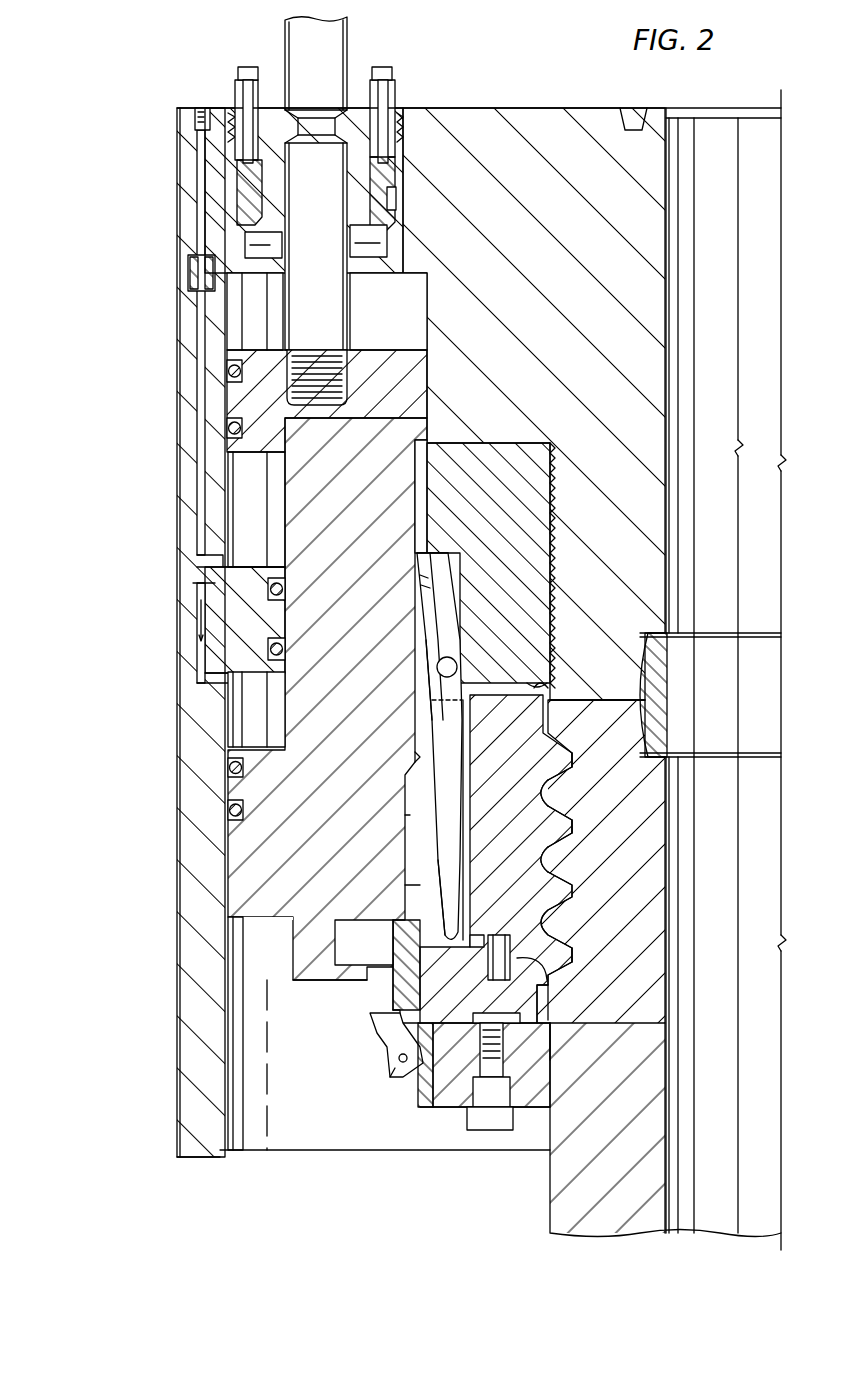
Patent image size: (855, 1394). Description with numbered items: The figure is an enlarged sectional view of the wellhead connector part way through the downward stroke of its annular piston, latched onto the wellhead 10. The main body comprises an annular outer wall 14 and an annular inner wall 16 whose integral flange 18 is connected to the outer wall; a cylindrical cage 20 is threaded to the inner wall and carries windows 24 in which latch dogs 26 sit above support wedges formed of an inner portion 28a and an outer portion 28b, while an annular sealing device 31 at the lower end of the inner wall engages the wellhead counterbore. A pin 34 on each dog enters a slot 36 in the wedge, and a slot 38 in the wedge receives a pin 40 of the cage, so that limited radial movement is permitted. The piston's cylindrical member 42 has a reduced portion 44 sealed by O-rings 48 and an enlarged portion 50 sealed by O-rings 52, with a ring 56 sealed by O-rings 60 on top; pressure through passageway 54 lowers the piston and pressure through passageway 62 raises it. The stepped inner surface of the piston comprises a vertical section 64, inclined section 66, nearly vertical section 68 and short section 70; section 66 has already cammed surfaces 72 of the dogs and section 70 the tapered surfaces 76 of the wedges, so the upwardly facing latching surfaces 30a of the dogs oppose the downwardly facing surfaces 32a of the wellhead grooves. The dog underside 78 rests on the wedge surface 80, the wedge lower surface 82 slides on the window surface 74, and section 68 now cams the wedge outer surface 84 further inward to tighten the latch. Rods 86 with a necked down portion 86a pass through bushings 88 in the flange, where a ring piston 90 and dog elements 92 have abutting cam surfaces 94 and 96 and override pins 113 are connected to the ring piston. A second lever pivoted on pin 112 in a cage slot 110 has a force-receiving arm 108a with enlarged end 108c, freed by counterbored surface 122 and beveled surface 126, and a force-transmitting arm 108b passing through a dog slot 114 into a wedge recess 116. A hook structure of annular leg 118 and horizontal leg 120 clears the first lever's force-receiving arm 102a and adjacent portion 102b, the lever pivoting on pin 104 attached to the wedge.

The wellhead 10 is at (653, 1163).
The annular outer wall 14 is at (195, 1060).
The annular inner wall 16 is at (650, 529).
The integral flange 18 is at (222, 120).
The cylindrical cage 20 is at (537, 492).
The windows 24 is at (553, 655).
The latch dogs 26 is at (585, 925).
The inner portion 28a is at (560, 1035).
The outer portion 28b is at (393, 990).
The latching surfaces 30a is at (572, 807).
The annular sealing device 31 is at (660, 665).
The downwardly facing surfaces 32a is at (546, 792).
The pin 34 is at (572, 955).
The slot 36 is at (484, 930).
The slot 38 is at (552, 1083).
The pin 40 is at (470, 1065).
The cylindrical member 42 is at (360, 500).
The reduced outer diameter portion 44 is at (285, 710).
The O-rings 48 is at (287, 648).
The enlarged diameter portion 50 is at (237, 862).
The O-rings 52 is at (228, 768).
The passageway 54 is at (205, 652).
The ring 56 is at (410, 387).
The O-rings 60 is at (228, 370).
The passageway 62 is at (200, 515).
The straight vertical section 64 is at (427, 637).
The inclined section 66 is at (412, 762).
The section 68 is at (405, 818).
The short section 70 is at (410, 889).
The inclined surfaces 72 is at (432, 705).
The horizontal surfaces 74 is at (552, 1023).
The tapered surfaces 76 is at (395, 925).
The underside 78 is at (523, 995).
The upwardly facing surface 80 is at (555, 980).
The lower surfaces 82 is at (480, 1035).
The radially outer surfaces 84 is at (387, 969).
The rods 86 is at (347, 320).
The necked down portion 86a is at (322, 118).
The bushings 88 is at (403, 127).
The ring piston 90 is at (397, 190).
The dog elements 92 is at (250, 245).
The cam surface 94 is at (258, 222).
The cam surface 96 is at (393, 221).
The force-receiving arm 102a is at (379, 1022).
The pawl edge 102b is at (425, 1062).
The pivot pin 104 is at (403, 1064).
The force-receiving arm 108a is at (430, 593).
The force-transmitting arm 108b is at (440, 828).
The enlarged end portion 108c is at (417, 558).
The slots 110 is at (456, 540).
The pin 112 is at (453, 659).
The pins 113 is at (247, 67).
The slot 114 is at (472, 776).
The recess 116 is at (472, 900).
The annular leg 118 is at (305, 942).
The horizontal leg 120 is at (352, 976).
The counterbored surface 122 is at (426, 447).
The beveled surface 126 is at (425, 592).